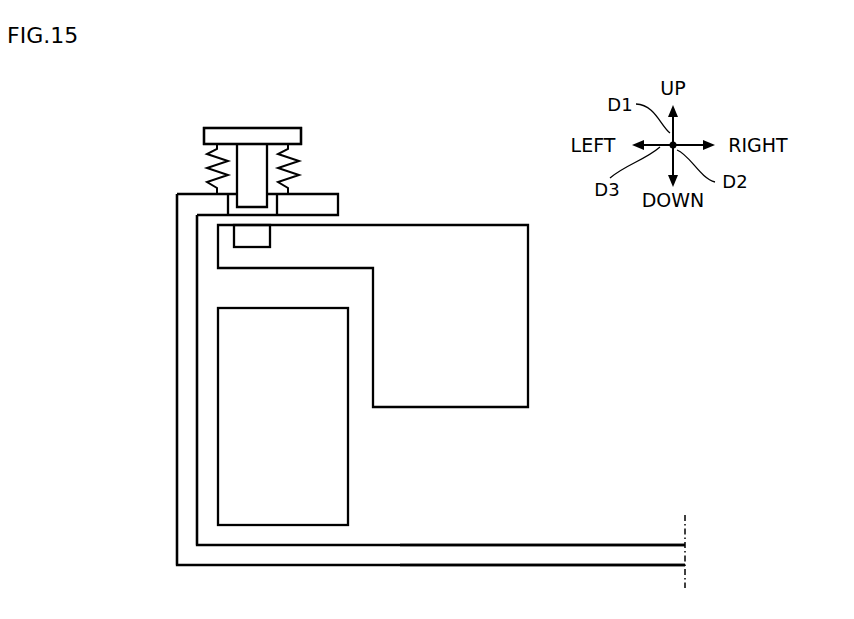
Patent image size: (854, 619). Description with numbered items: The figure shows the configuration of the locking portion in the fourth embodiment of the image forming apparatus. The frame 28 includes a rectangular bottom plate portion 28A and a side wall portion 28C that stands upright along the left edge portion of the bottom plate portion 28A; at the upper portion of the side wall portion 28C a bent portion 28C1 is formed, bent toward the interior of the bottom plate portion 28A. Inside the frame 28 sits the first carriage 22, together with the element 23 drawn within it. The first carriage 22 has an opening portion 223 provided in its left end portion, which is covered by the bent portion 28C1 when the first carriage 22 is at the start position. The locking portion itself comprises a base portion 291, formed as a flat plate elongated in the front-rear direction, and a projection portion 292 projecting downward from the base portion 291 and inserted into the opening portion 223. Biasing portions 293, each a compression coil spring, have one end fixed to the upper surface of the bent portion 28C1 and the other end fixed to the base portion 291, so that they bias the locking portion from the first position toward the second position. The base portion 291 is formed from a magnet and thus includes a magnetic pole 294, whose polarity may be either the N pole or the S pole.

The first carriage 22 is at (536, 303).
The component 23 is at (353, 445).
The opening portion 223 is at (276, 237).
The frame 28 is at (168, 348).
The bottom plate portion 28A is at (538, 545).
The side wall portion 28C is at (177, 297).
The bent portion 28C1 is at (177, 194).
The base portion 291 is at (227, 128).
The projection portion 292 is at (255, 208).
The biasing portion 293 is at (202, 176).
The magnetic pole 294 is at (254, 126).